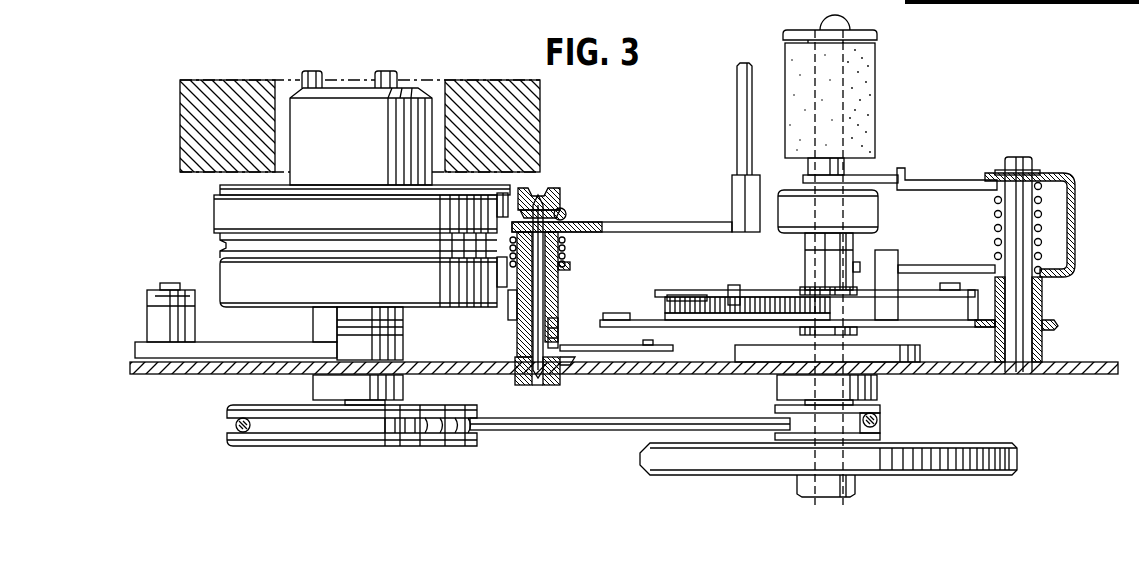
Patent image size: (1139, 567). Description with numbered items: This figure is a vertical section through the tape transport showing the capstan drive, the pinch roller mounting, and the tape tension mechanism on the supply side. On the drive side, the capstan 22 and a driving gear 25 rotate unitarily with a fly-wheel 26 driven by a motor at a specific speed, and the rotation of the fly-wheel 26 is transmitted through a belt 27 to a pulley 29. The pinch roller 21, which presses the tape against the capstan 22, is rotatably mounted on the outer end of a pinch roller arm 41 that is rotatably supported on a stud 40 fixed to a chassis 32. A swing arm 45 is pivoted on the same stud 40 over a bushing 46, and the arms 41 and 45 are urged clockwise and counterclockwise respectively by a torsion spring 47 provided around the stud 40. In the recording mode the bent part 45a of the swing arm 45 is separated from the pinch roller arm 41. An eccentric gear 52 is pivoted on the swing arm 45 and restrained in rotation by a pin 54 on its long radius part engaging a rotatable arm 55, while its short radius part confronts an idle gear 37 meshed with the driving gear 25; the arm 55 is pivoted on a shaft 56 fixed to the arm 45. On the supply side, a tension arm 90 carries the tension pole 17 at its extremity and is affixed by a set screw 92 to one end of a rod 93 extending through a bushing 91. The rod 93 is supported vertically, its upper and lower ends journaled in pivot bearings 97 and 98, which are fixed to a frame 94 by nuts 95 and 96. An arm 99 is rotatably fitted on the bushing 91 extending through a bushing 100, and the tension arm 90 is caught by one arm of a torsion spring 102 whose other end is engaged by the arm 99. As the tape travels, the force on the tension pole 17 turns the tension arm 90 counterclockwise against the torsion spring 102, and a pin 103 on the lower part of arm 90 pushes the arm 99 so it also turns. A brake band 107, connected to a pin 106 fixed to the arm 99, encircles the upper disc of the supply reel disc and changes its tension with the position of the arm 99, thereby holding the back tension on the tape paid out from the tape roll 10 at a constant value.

The supply side tape roll 10 is at (248, 80).
The tension pole 17 is at (737, 90).
The pinch roller 21 is at (878, 55).
The capstan 22 is at (845, 75).
The driving gear 25 is at (806, 285).
The fly-wheel 26 is at (1018, 455).
The belt 27 is at (590, 430).
The pulley 29 is at (320, 447).
The chassis 32 is at (1090, 376).
The idle gear 37 is at (812, 300).
The stud 40 is at (1028, 160).
The pinch roller arm 41 is at (1076, 210).
The swing arm 45 is at (1060, 325).
The bent part 45a is at (893, 250).
The bushing 46 is at (1040, 345).
The torsion spring 47 is at (1045, 258).
The eccentric gear 52 is at (668, 300).
The pin 54 is at (733, 285).
The rotatable arm 55 is at (693, 290).
The shaft 56 is at (960, 335).
The tension arm 90 is at (665, 222).
The bushing 91 is at (522, 325).
The set screw 92 is at (558, 330).
The rod 93 is at (575, 363).
The frame 94 is at (566, 216).
The nut 95 is at (560, 205).
The nut 96 is at (515, 378).
The pivot bearing 97 is at (545, 190).
The pivot bearing 98 is at (545, 380).
The arm 99 is at (570, 266).
The bushing 100 is at (512, 305).
The torsion spring 102 is at (566, 248).
The pin 103 is at (497, 277).
The pin 106 is at (497, 205).
The brake band 107 is at (214, 213).